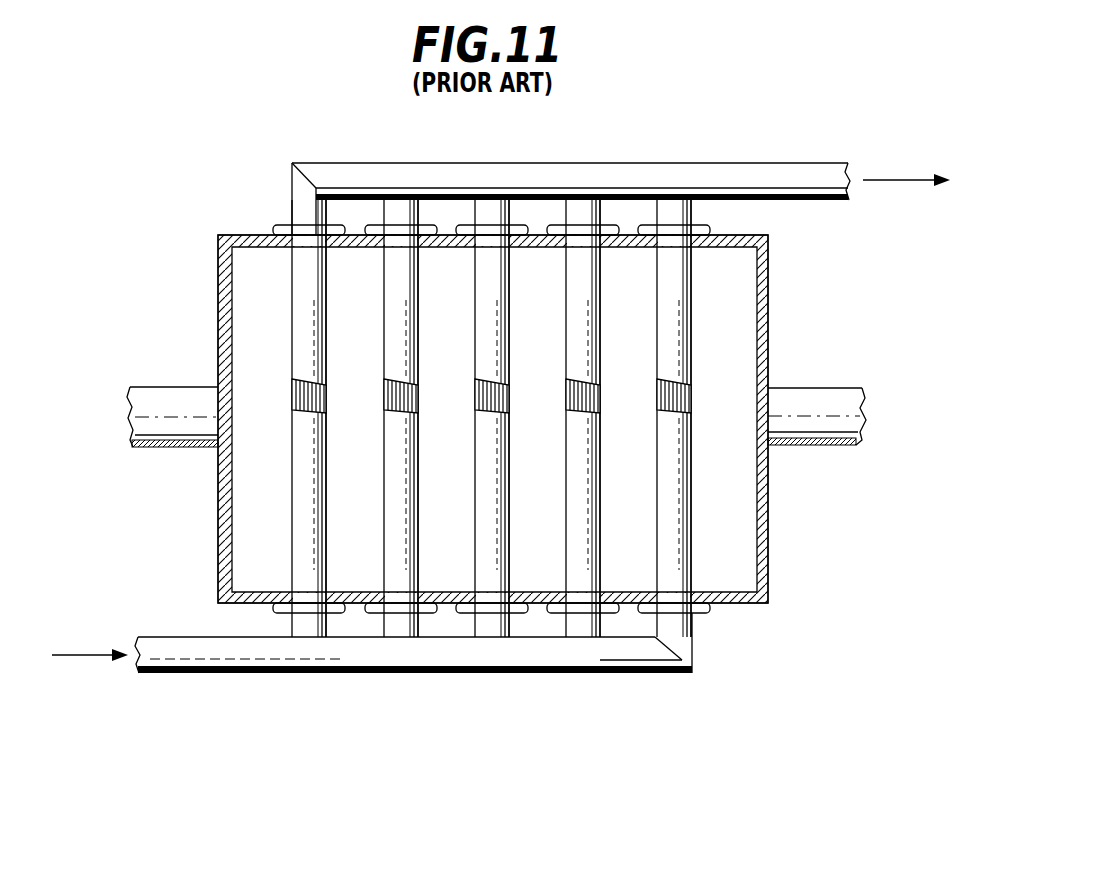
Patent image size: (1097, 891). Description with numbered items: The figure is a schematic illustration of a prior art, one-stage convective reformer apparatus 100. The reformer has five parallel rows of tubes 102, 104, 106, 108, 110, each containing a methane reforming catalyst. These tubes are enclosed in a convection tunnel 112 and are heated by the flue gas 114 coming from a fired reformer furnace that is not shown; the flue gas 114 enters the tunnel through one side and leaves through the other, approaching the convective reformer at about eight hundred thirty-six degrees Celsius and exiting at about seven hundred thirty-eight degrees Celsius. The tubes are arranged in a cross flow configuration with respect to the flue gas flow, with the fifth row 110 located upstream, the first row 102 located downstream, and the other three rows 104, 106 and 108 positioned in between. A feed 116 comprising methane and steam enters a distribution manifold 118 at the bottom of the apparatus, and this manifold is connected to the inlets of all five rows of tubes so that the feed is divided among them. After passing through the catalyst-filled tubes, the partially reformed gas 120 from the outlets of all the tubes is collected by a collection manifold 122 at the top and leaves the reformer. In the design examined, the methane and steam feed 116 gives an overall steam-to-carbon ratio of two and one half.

The one-stage convective reformer apparatus 100 is at (158, 273).
The first row of tubes 102 is at (293, 518).
The second row of tubes 104 is at (410, 583).
The third row of tubes 106 is at (497, 582).
The fourth row of tubes 108 is at (605, 578).
The fifth row of tubes 110 is at (683, 575).
The convection tunnel 112 is at (770, 572).
The flue gas 114 is at (88, 417).
The feed 116 is at (93, 655).
The distribution manifold 118 is at (205, 670).
The partially reformed gas 120 is at (885, 180).
The collection manifold 122 is at (627, 165).